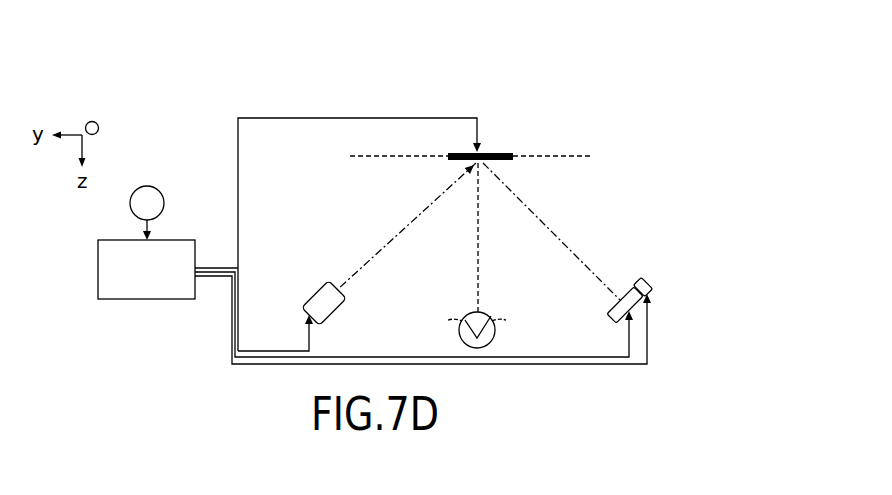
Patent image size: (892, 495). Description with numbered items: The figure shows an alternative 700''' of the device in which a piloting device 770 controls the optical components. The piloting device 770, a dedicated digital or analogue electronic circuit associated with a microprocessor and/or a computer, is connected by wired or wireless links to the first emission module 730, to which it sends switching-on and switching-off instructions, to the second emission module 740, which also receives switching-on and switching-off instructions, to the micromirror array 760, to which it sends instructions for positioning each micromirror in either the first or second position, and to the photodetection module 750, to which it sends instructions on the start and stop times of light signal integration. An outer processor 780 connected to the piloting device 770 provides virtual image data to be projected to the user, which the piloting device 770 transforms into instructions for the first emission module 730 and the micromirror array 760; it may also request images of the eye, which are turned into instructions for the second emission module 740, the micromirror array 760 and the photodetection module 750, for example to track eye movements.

The alternative 700''' is at (401, 196).
The processor 780 is at (152, 196).
The piloting device 770 is at (155, 287).
The first emission module 730 is at (323, 290).
The micromirror array 760 is at (493, 151).
The photodetection module 750 is at (628, 296).
The second emission module 740 is at (650, 281).